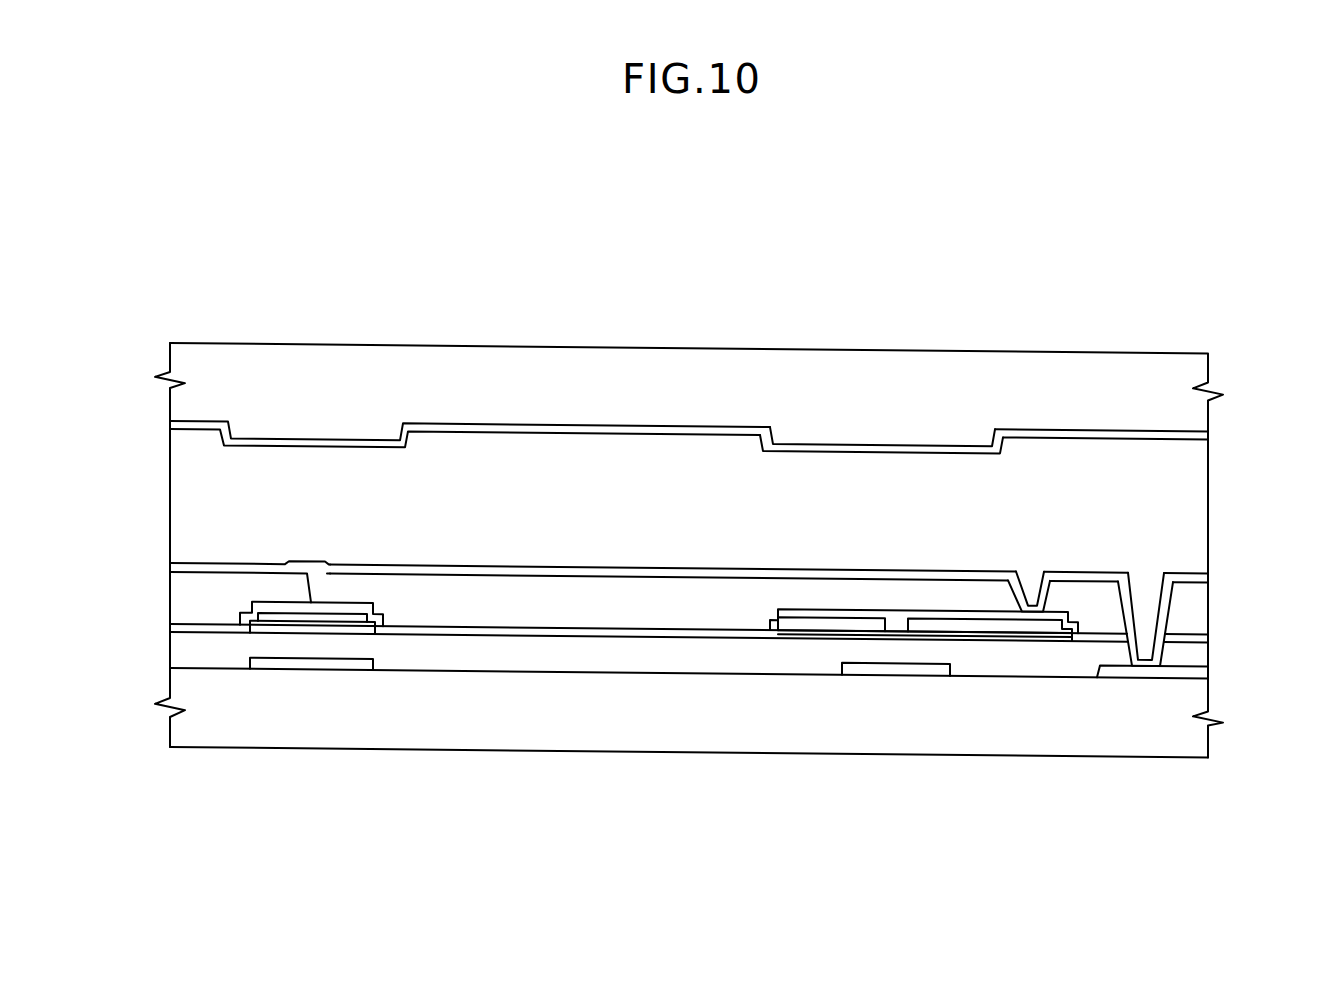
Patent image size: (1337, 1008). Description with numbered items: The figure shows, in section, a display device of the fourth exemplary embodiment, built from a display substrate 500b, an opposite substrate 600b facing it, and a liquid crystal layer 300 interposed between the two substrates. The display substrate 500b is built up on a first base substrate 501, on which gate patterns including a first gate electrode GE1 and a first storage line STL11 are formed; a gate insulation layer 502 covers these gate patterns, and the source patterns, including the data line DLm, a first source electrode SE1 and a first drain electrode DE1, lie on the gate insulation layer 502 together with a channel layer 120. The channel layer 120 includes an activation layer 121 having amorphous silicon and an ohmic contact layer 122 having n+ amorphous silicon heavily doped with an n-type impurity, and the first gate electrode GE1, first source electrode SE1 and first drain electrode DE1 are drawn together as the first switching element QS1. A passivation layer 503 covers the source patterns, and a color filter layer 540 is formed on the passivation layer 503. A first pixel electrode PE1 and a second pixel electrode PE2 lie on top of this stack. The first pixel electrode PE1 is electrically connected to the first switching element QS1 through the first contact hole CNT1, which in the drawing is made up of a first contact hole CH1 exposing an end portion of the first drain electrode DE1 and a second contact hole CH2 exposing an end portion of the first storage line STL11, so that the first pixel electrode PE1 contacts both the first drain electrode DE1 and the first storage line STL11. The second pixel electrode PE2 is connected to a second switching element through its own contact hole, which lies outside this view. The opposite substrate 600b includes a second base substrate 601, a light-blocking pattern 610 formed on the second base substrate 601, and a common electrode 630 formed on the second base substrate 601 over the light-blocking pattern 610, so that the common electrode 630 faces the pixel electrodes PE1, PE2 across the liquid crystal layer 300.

The opposite substrate 600b is at (150, 347).
The liquid crystal layer 300 is at (150, 428).
The lower display substrate 500b is at (150, 748).
The second base substrate 601 is at (1208, 403).
The common electrode 630 is at (1208, 435).
The light-blocking pattern 610 is at (870, 438).
The second pixel electrode PE2 is at (256, 566).
The first pixel electrode PE1 is at (833, 573).
The first contact hole CNT1 is at (1090, 575).
The first contact hole CH1 is at (1032, 585).
The second contact hole CH2 is at (1145, 596).
The color filter layer 540 is at (1198, 610).
The passivation layer 503 is at (1198, 637).
The gate insulation layer 502 is at (1198, 658).
The first base substrate 501 is at (1198, 737).
The data line DLm is at (287, 618).
The first storage line STL11 is at (1148, 802).
The first switching element QS1 is at (925, 747).
The first source electrode SE1 is at (815, 626).
The first gate electrode GE1 is at (892, 672).
The first drain electrode DE1 is at (962, 625).
The channel layer 120 is at (926, 754).
The activation layer 121 is at (1012, 640).
The ohmic contact layer 122 is at (1057, 635).